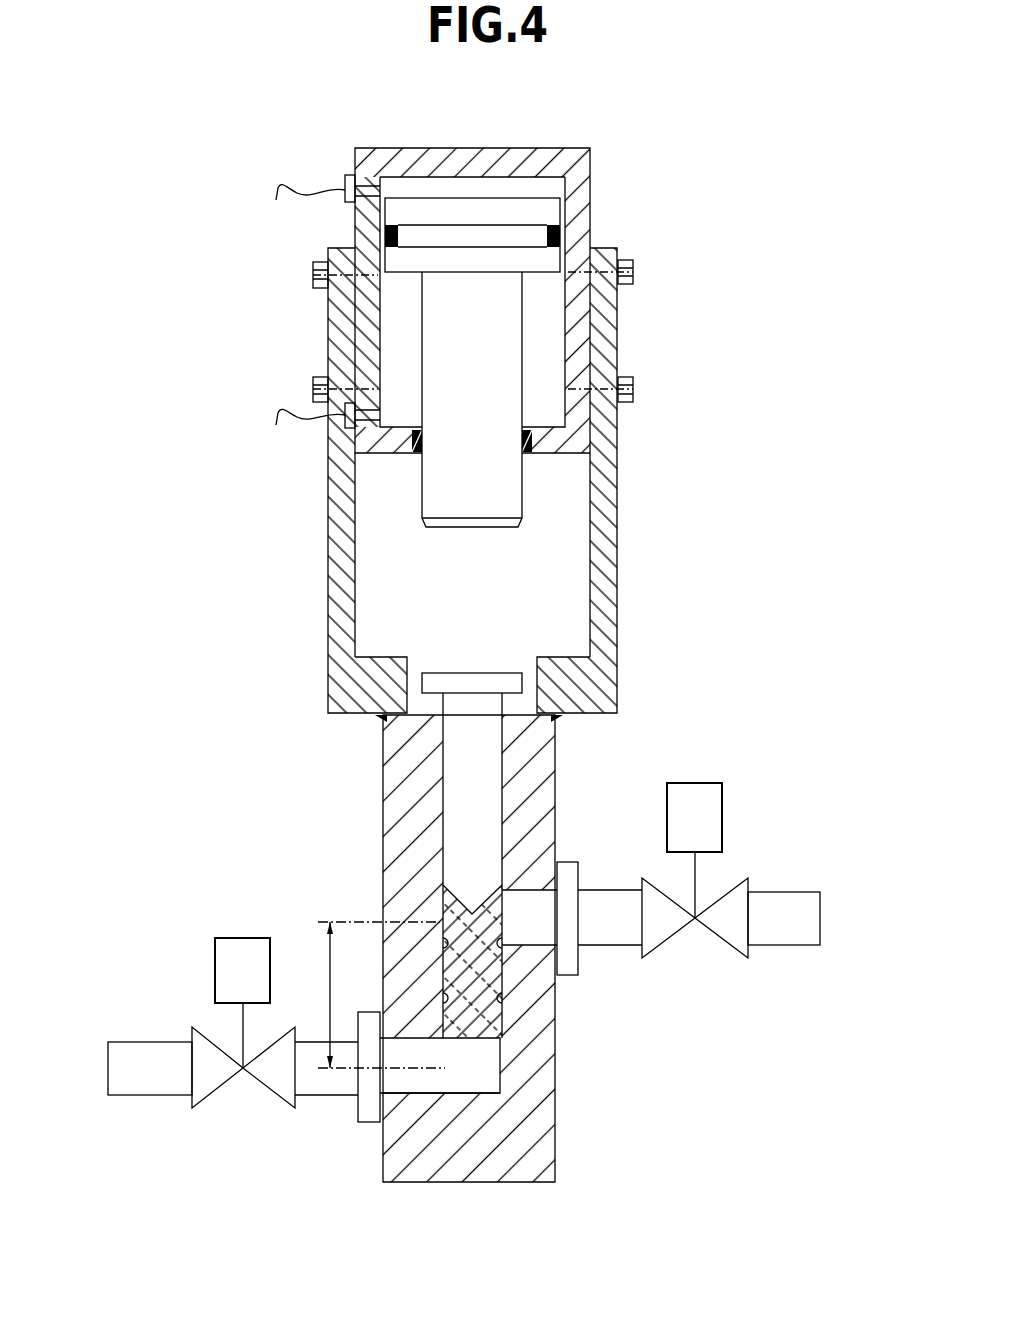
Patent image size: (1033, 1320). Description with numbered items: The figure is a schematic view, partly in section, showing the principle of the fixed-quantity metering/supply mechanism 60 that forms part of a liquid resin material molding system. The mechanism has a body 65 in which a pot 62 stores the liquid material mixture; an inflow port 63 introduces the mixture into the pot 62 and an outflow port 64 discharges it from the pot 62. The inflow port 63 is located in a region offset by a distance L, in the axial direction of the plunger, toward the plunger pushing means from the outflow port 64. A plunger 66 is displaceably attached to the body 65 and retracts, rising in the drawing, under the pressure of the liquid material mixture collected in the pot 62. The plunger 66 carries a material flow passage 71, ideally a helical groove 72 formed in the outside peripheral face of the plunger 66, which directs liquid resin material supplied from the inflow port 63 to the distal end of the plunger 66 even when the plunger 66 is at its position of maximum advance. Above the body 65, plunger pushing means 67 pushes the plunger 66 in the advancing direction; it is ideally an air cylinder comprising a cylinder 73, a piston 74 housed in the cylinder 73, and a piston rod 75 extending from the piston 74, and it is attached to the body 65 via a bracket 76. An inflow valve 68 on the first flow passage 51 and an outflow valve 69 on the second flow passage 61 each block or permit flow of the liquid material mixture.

The fixed-quantity metering/supply mechanism 60 is at (697, 250).
The plunger pushing means 67 is at (597, 190).
The cylinder 73 is at (562, 351).
The piston 74 is at (462, 213).
The piston rod 75 is at (452, 487).
The bracket 76 is at (607, 603).
The plunger 66 is at (453, 858).
The body 65 is at (532, 1128).
The material flow passage 71 is at (483, 965).
The helical groove 72 is at (472, 961).
The inflow port 63 is at (533, 899).
The pot 62 is at (500, 1050).
The outflow port 64 is at (408, 1093).
The inflow valve 68 is at (727, 943).
The first flow passage 51 is at (777, 895).
The outflow valve 69 is at (267, 1088).
The second flow passage 61 is at (142, 1088).